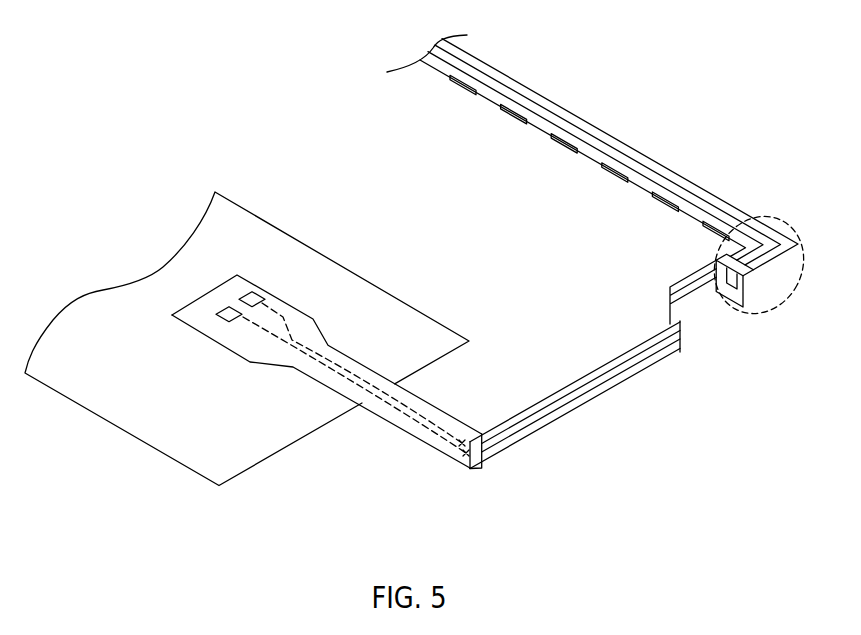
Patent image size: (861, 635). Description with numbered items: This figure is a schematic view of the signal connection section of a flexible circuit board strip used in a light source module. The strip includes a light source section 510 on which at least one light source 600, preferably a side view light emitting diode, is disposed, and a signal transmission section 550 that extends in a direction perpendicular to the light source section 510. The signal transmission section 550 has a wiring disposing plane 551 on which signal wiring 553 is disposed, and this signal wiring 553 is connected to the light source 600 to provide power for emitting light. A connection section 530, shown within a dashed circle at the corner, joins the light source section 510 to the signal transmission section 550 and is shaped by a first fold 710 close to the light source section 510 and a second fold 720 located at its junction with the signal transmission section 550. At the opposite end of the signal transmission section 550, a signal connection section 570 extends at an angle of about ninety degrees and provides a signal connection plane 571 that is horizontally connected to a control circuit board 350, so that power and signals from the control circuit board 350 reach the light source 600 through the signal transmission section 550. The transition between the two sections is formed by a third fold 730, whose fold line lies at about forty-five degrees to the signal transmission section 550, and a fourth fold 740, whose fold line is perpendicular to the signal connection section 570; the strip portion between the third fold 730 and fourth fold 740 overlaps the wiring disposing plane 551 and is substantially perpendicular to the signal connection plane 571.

The control circuit board 350 is at (268, 435).
The light source section 510 is at (700, 193).
The connection section 530 is at (781, 219).
The signal transmission section 550 is at (581, 386).
The wiring disposing plane 551 is at (541, 130).
The signal wiring 553 is at (527, 430).
The signal connection section 570 is at (383, 413).
The signal connection plane 571 is at (415, 429).
The light source 600 is at (461, 84).
The first fold 710 is at (746, 271).
The second fold 720 is at (716, 282).
The third fold 730 is at (467, 461).
The fourth fold 740 is at (470, 438).